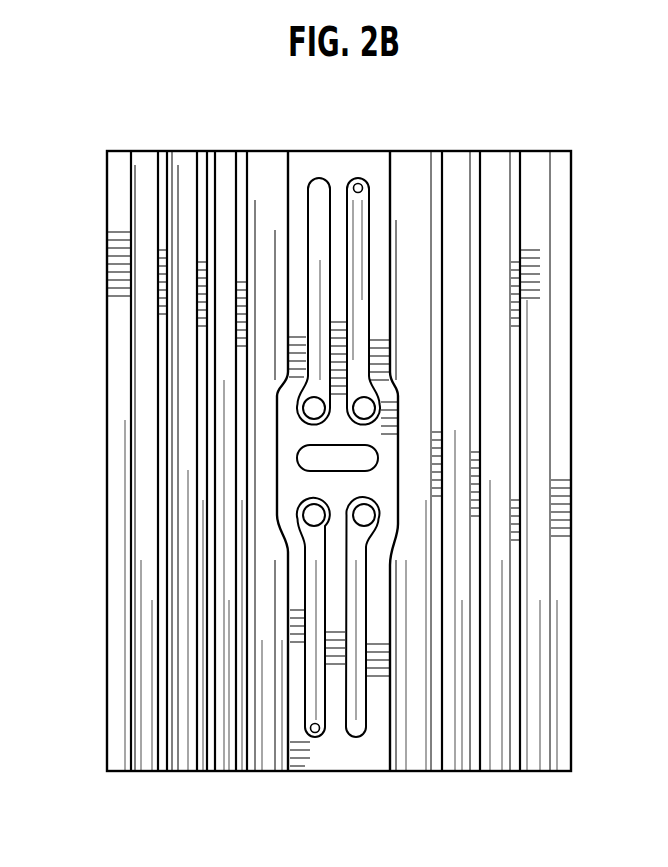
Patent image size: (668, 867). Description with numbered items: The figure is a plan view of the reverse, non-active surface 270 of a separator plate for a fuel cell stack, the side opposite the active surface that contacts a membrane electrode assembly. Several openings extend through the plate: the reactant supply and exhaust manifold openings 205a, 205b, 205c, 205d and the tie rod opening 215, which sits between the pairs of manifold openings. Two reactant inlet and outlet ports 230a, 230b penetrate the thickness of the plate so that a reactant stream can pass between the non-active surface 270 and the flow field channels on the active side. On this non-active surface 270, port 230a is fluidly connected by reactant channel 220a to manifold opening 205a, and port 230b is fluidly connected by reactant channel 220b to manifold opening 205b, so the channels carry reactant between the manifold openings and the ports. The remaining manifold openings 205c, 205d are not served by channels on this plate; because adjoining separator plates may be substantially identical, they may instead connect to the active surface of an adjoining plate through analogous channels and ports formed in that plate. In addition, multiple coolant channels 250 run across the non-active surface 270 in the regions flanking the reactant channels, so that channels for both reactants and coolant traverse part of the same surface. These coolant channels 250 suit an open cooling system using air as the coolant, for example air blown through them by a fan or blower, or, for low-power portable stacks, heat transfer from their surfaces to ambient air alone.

The reactant supply and exhaust manifold opening 205a is at (368, 408).
The reactant supply and exhaust manifold opening 205b is at (308, 512).
The reactant supply and exhaust manifold opening 205c is at (308, 408).
The reactant supply and exhaust manifold opening 205d is at (368, 512).
The tie rod opening 215 is at (365, 458).
The reactant channel 220a is at (358, 282).
The reactant channel 220b is at (320, 650).
The reactant port 230a is at (360, 182).
The reactant port 230b is at (310, 728).
The coolant channels 250 is at (530, 762).
The non-active surface 270 is at (108, 608).